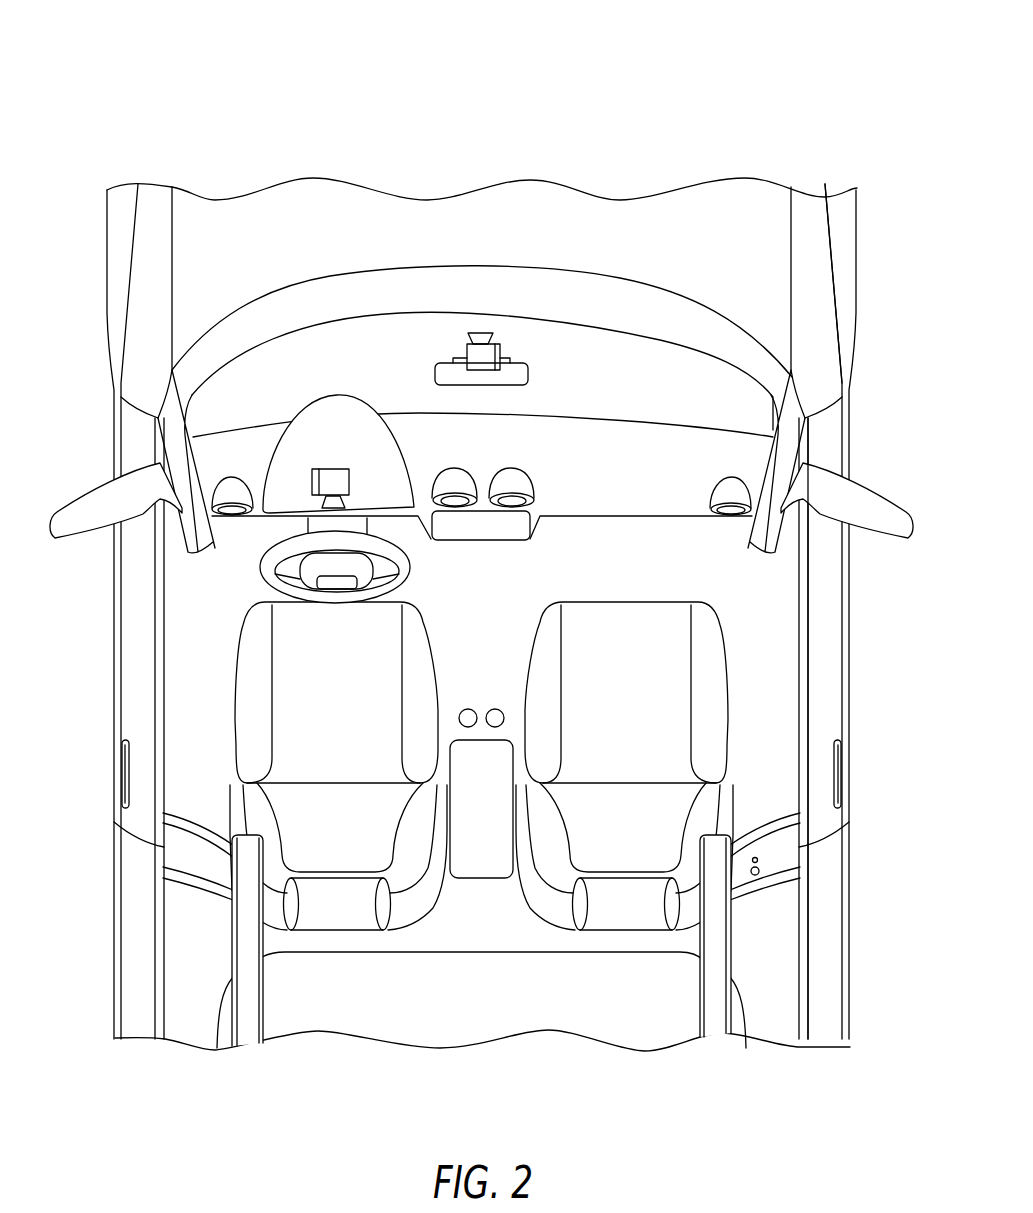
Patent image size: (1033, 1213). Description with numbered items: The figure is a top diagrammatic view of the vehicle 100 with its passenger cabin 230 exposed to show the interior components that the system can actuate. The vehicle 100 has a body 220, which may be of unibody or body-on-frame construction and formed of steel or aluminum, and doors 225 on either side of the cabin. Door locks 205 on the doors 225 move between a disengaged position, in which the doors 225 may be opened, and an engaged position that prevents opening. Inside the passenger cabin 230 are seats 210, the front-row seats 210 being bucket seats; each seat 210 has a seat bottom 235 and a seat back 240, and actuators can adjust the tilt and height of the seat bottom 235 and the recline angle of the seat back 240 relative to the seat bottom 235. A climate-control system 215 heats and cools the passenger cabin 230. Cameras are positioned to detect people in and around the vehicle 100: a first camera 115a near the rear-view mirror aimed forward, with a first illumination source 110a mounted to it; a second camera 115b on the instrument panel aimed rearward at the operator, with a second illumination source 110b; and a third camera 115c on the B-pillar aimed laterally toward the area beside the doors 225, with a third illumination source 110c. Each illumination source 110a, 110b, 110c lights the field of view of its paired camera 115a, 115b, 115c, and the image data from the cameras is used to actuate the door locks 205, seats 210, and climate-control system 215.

The vehicle 100 is at (220, 72).
The first illumination source 110a is at (503, 350).
The first camera 115a is at (466, 356).
The second illumination source 110b is at (312, 481).
The second camera 115b is at (350, 478).
The third illumination source 110c is at (755, 857).
The third camera 115c is at (755, 876).
The door locks 205 is at (118, 780).
The seats 210 is at (481, 820).
The climate-control system 215 is at (545, 492).
The body 220 is at (820, 290).
The doors 225 is at (132, 670).
The passenger cabin 230 is at (782, 615).
The seat bottom 235 is at (543, 700).
The seat back 240 is at (543, 840).